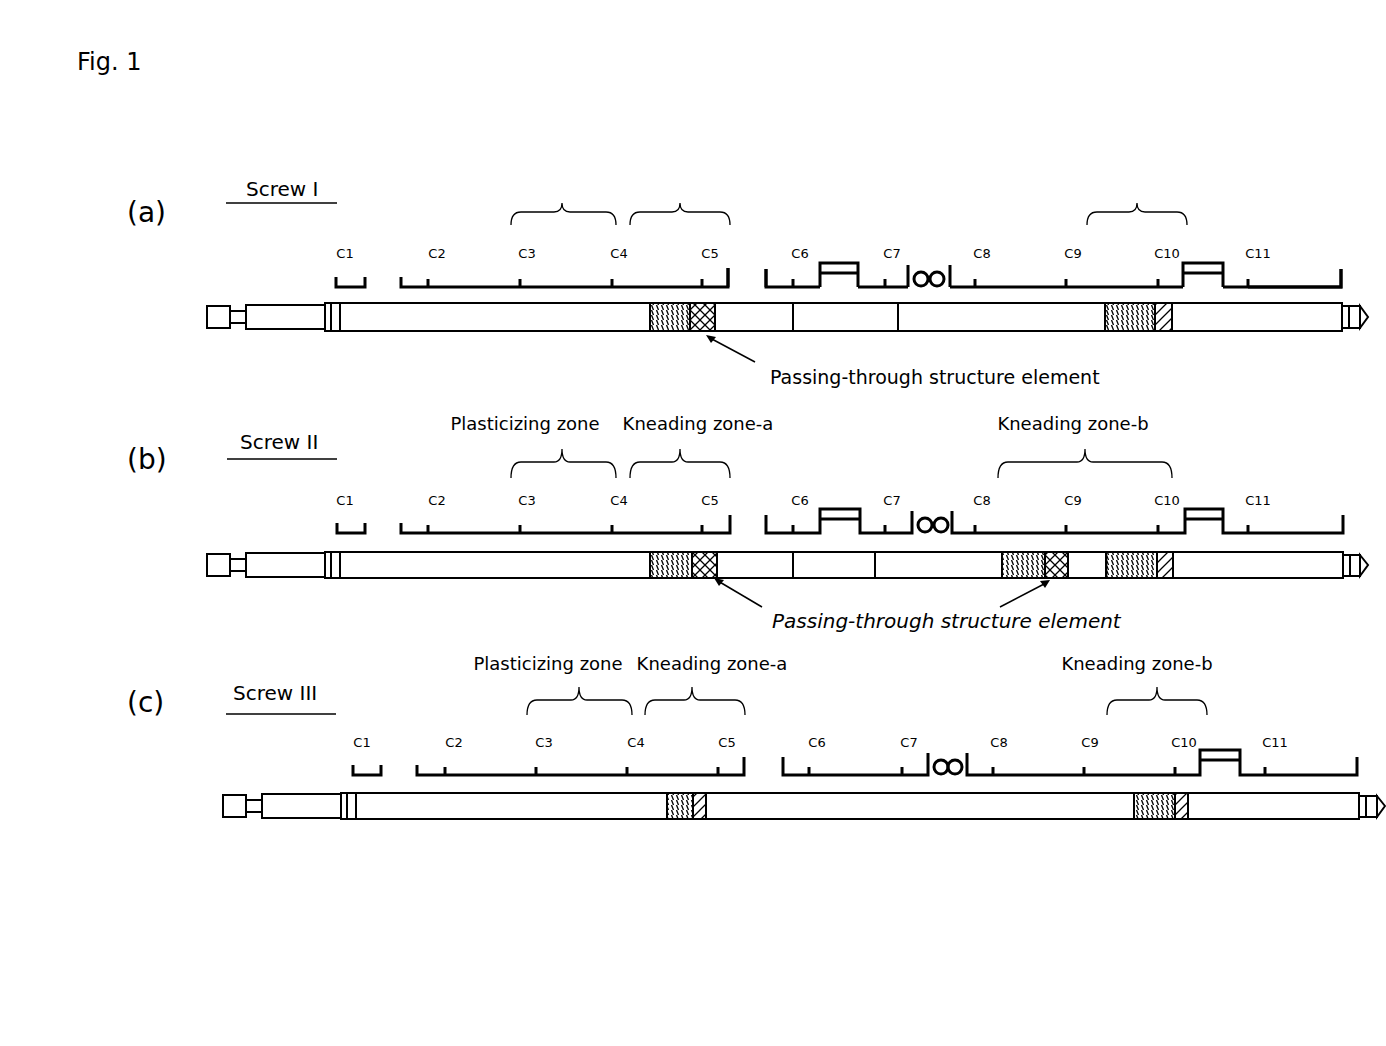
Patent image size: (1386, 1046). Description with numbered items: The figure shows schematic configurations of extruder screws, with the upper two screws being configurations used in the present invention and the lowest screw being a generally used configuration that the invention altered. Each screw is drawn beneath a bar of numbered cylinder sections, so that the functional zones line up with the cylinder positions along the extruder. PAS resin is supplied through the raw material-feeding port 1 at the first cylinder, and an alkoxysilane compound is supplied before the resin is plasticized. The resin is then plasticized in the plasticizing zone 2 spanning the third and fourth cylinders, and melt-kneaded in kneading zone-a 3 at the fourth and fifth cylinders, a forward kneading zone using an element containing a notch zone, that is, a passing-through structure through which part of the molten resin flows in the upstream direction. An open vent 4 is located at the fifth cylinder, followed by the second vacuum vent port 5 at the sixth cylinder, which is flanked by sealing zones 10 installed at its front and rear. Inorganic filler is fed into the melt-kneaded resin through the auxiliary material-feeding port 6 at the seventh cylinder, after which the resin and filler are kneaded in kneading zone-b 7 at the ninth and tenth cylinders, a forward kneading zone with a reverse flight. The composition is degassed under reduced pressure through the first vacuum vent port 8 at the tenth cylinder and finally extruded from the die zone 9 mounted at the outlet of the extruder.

The raw material-feeding port 1 is at (350, 251).
The plasticizing zone 2 is at (533, 178).
The kneading zone-a 3 is at (698, 178).
The open vent 4 is at (739, 251).
The second vacuum vent port 5 is at (786, 251).
The auxiliary material-feeding port 6 is at (855, 251).
The kneading zone-b 7 is at (1121, 178).
The first vacuum vent port 8 is at (1203, 251).
The die zone 9 is at (1294, 251).
The sealing zones 10 is at (842, 333).